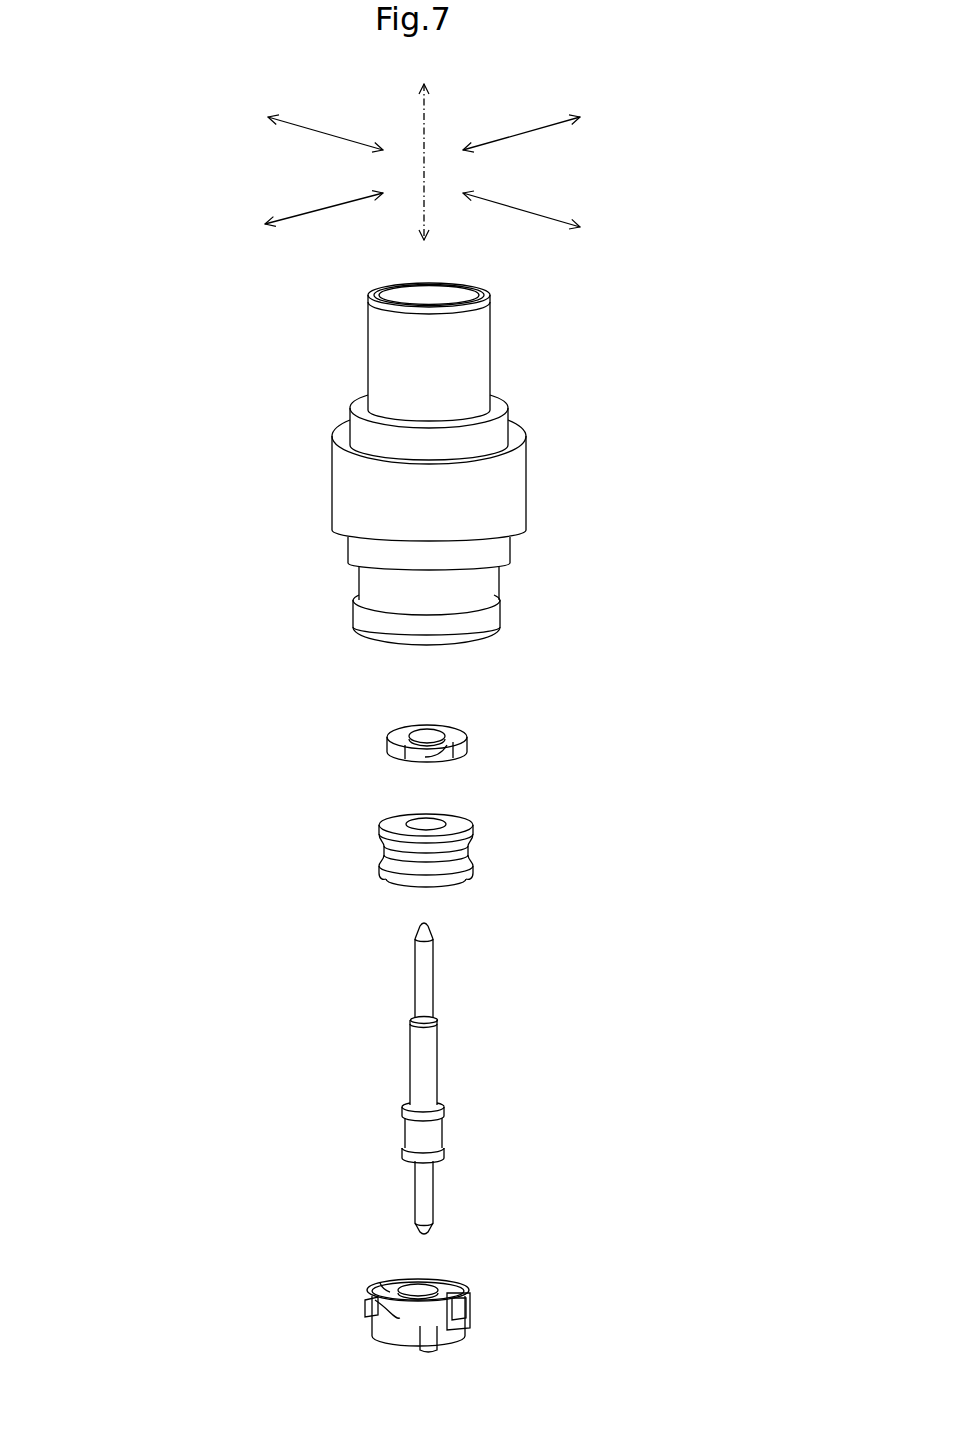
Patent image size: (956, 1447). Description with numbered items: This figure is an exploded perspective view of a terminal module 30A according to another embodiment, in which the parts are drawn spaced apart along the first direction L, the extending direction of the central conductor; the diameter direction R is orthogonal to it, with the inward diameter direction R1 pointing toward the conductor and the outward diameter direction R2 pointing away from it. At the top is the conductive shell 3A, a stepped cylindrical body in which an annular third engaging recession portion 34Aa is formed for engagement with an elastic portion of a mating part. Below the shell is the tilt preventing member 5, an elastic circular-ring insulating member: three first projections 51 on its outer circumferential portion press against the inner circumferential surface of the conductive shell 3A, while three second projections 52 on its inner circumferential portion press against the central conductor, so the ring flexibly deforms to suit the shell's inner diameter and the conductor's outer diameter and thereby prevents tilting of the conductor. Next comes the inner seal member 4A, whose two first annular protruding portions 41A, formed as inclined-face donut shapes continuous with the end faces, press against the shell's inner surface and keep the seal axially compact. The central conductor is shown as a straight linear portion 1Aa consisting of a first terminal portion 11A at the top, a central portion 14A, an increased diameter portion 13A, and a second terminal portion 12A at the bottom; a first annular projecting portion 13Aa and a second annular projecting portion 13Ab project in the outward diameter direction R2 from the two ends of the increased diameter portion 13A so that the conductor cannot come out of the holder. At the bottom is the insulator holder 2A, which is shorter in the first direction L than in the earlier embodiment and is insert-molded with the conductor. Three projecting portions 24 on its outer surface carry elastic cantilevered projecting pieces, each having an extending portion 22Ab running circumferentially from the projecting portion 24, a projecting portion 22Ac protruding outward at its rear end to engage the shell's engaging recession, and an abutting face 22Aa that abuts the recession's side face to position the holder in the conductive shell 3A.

The first direction L is at (425, 120).
The diameter direction R is at (422, 166).
The inward diameter direction R1 is at (422, 178).
The outward diameter direction R2 is at (423, 175).
The terminal module 30A is at (207, 470).
The conductive shell 3A is at (523, 345).
The third engaging recession portion 34Aa is at (482, 588).
The tilt preventing member 5 is at (471, 726).
The first projections 51 is at (386, 756).
The second projections 52 is at (456, 758).
The inner seal member 4A is at (372, 851).
The first annular protruding portions 41A is at (473, 868).
The straight linear portion 1Aa is at (365, 1052).
The first terminal portion 11A is at (426, 967).
The central portion 14A is at (428, 1045).
The increased diameter portion 13A is at (428, 1134).
The first annular projecting portion 13Aa is at (442, 1112).
The second annular projecting portion 13Ab is at (443, 1153).
The second terminal portion 12A is at (424, 1192).
The insulator holder 2A is at (495, 1305).
The projecting portions 24 is at (455, 1284).
The extending portion 22Ab is at (385, 1282).
The projecting portion 22Ac is at (365, 1310).
The abutting face 22Aa is at (475, 1291).